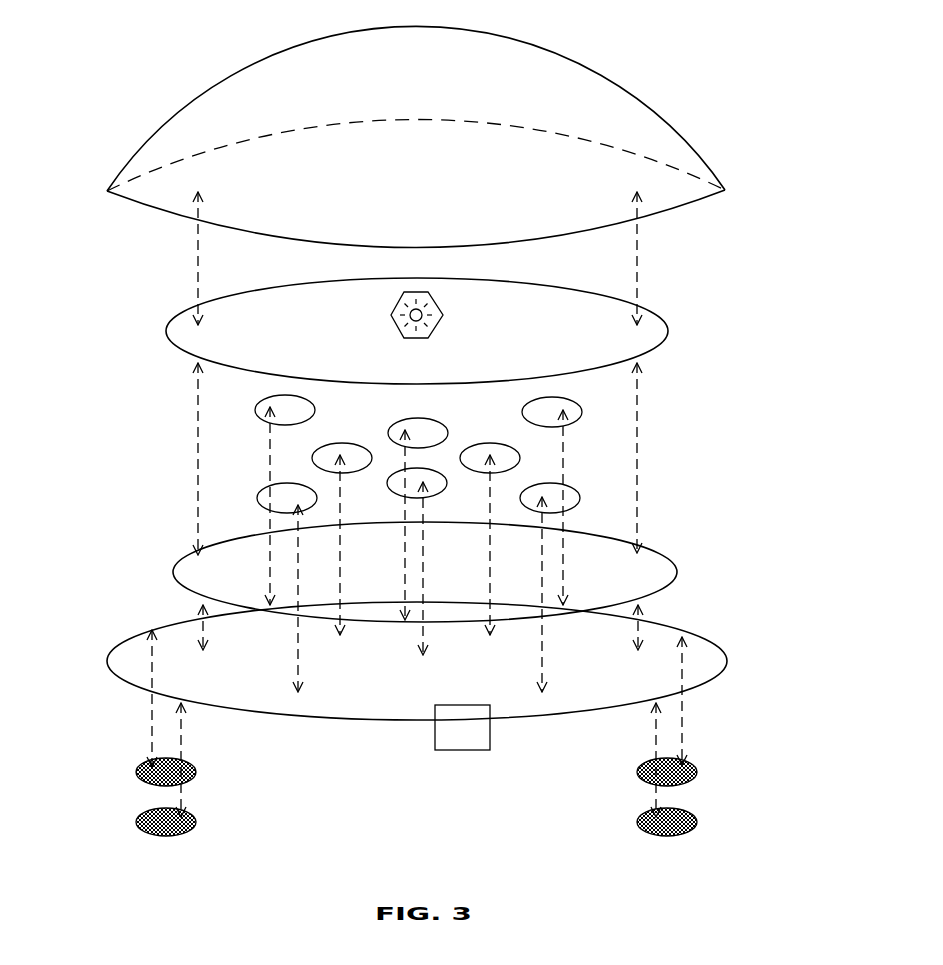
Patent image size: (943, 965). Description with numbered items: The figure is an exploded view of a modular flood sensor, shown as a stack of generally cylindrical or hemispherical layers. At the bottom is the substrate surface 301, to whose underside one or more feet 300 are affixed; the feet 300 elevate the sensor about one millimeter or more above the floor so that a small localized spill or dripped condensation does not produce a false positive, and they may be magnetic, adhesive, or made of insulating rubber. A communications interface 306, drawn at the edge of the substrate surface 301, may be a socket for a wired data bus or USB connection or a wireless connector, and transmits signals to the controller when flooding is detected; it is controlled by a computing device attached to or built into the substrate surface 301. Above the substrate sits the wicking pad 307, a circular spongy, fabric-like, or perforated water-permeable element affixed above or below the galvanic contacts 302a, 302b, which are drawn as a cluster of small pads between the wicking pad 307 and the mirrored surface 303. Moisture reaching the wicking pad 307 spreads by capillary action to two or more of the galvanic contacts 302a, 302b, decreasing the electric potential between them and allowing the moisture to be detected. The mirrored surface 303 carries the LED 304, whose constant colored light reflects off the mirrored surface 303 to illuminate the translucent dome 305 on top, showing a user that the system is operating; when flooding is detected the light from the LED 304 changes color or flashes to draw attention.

The translucent dome 305 is at (180, 97).
The mirrored surface 303 is at (178, 307).
The light emitting diode 304 is at (395, 302).
The galvanic contact 302a is at (240, 410).
The galvanic contact 302b is at (458, 433).
The wicking pad 307 is at (673, 558).
The substrate surface 301 is at (157, 602).
The communications interface 306 is at (430, 752).
The feet 300 is at (628, 782).